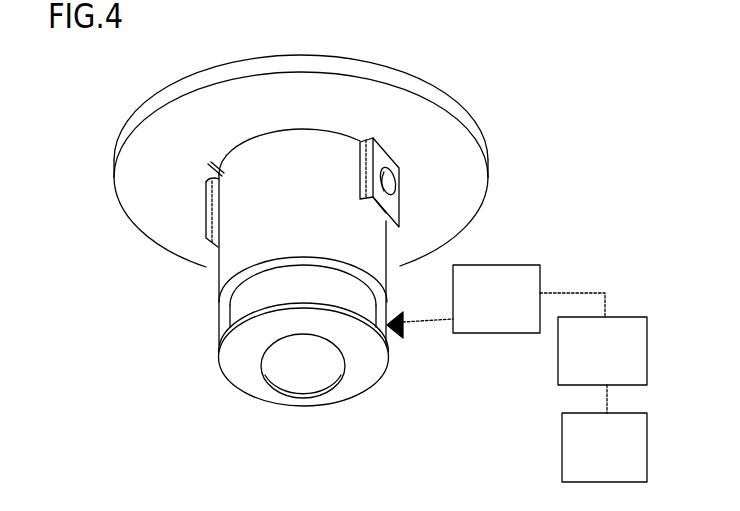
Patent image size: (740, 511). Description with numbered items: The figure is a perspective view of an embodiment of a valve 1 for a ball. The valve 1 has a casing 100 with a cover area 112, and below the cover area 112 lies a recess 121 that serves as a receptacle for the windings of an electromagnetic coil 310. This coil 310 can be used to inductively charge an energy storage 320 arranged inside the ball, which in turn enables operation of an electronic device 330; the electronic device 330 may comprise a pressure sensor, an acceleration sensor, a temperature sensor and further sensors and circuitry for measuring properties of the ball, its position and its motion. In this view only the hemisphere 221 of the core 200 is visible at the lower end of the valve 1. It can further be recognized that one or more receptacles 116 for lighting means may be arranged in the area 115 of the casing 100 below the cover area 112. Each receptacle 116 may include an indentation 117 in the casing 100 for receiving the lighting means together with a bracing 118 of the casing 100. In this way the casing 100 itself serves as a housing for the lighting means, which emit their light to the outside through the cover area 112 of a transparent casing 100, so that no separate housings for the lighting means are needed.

The valve 1 is at (441, 81).
The casing 100 is at (123, 130).
The cover area 112 is at (162, 98).
The area 115 is at (206, 168).
The receptacle 116 is at (204, 211).
The indentation 117 is at (397, 178).
The bracing 118 is at (358, 170).
The recess 121 is at (230, 307).
The core 200 is at (340, 371).
The hemisphere 221 is at (272, 381).
The electromagnetic coil 310 is at (496, 299).
The energy storage 320 is at (602, 351).
The electronic device 330 is at (604, 447).